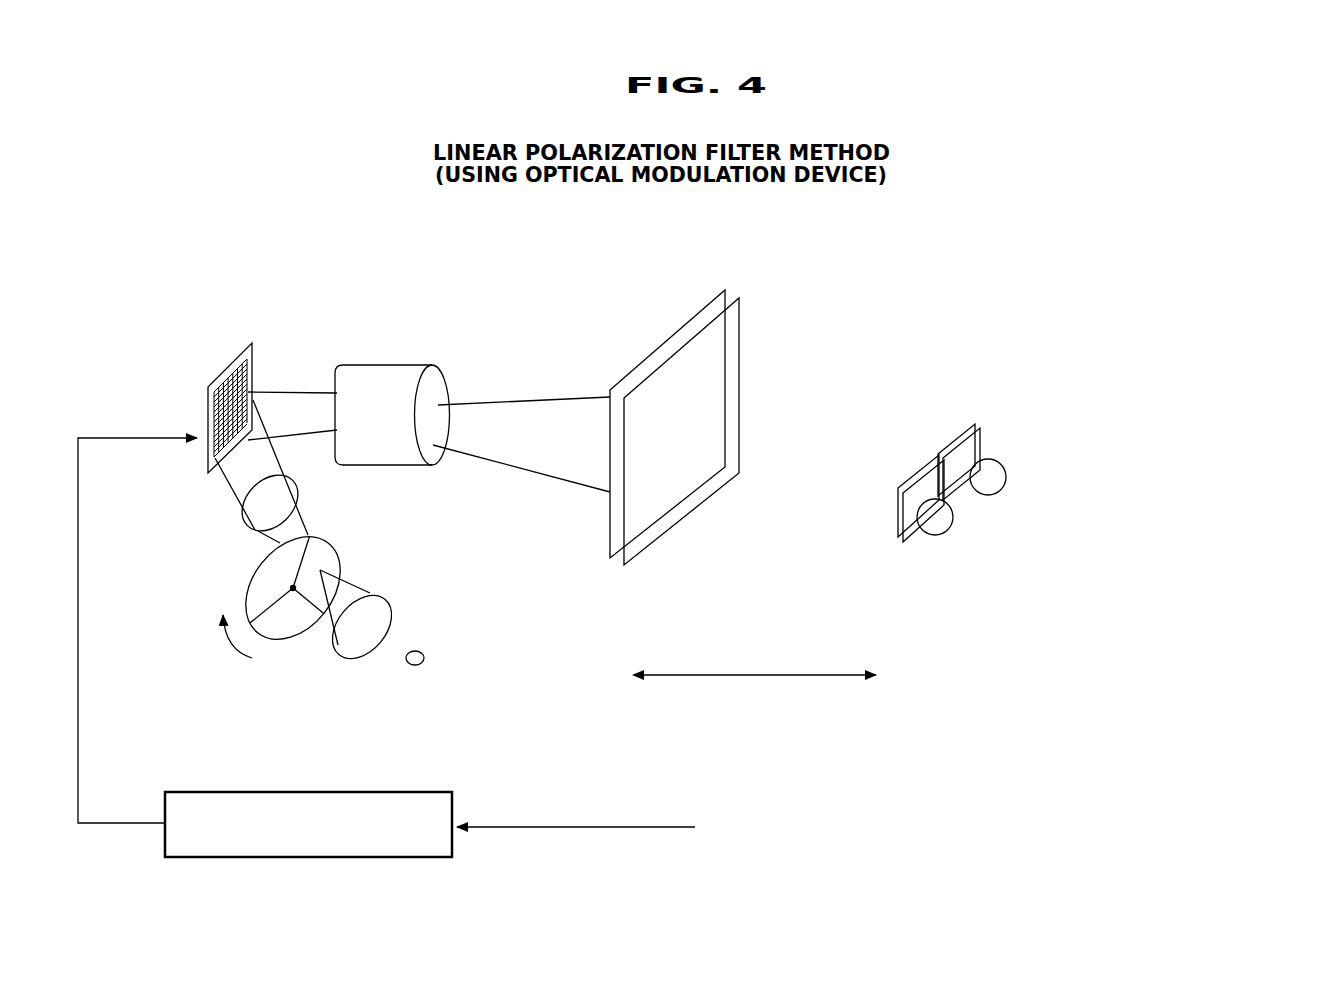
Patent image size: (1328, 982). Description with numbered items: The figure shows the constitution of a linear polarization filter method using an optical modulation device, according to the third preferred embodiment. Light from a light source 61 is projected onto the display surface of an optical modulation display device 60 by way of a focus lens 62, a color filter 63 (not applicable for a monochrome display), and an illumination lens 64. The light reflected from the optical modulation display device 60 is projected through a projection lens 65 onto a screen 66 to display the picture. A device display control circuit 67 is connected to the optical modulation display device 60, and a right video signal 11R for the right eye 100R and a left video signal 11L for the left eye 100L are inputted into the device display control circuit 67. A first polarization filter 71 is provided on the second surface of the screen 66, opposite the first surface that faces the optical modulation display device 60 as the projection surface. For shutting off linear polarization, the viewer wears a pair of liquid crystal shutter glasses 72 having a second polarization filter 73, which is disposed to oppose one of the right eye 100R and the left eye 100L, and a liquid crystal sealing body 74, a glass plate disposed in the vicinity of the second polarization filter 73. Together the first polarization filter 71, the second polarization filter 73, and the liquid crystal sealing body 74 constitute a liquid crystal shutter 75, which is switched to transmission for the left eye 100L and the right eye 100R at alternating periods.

The optical modulation display device 60 is at (205, 363).
The light source 61 is at (486, 676).
The focus lens 62 is at (398, 627).
The color filter 63 is at (291, 647).
The illumination lens 64 is at (313, 492).
The projection lens 65 is at (458, 397).
The screen 66 is at (693, 303).
The device display control circuit 67 is at (380, 792).
The first polarization filter 71 is at (752, 318).
The liquid crystal shutter glasses 72 is at (1056, 493).
The second polarization filter 73 is at (965, 500).
The liquid crystal sealing body 74 is at (920, 465).
The liquid crystal shutter 75 is at (765, 652).
The left eye 100L is at (928, 520).
The right eye 100R is at (997, 472).
The right video signal 11R is at (576, 809).
The left video signal 11L is at (670, 805).